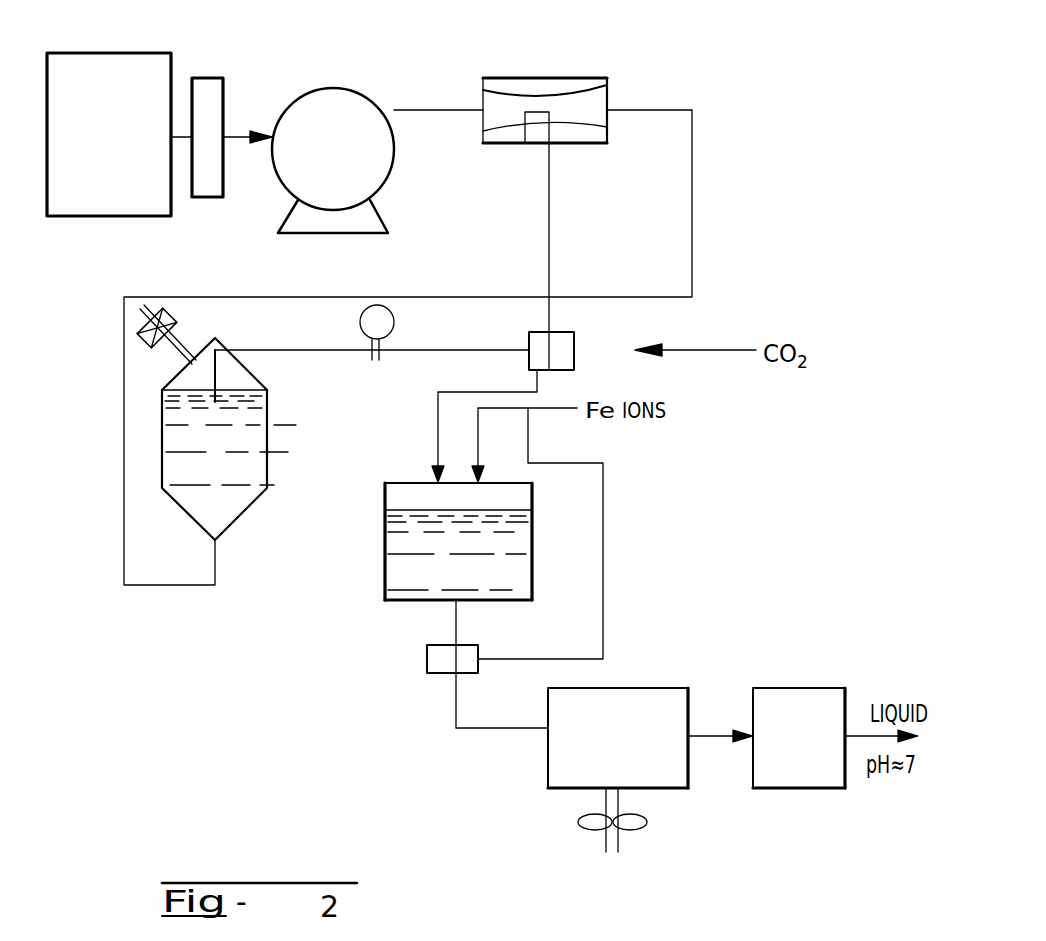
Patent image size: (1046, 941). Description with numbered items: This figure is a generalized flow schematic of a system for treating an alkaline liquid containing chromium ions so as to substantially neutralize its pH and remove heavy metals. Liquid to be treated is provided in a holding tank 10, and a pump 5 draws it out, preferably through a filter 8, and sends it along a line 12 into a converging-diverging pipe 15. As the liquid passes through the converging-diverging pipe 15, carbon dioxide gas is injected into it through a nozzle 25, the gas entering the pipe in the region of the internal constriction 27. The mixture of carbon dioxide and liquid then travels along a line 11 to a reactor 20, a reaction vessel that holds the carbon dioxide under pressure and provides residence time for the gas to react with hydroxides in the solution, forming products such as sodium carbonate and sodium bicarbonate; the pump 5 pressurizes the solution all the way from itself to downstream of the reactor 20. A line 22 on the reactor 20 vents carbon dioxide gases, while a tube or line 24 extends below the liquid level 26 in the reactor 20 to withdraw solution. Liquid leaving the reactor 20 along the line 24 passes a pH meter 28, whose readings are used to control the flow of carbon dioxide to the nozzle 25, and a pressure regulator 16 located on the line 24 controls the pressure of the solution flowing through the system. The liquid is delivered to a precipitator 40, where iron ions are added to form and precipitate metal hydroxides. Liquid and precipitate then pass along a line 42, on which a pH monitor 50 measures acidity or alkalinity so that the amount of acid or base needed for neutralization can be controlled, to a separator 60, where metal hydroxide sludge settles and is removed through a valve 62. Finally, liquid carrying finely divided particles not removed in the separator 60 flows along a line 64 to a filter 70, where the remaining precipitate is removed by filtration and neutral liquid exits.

The pump 5 is at (313, 115).
The filter 8 is at (210, 88).
The holding tank 10 is at (117, 200).
The line 11 is at (693, 203).
The line 12 is at (418, 110).
The converging-diverging pipe 15 is at (564, 107).
The pressure regulator 16 is at (392, 317).
The reactor 20 is at (192, 439).
The line 22 is at (178, 340).
The line 24 is at (223, 357).
The nozzle 25 is at (530, 118).
The liquid level 26 is at (172, 395).
The membrane 27 is at (513, 107).
The pH meter 28 is at (533, 334).
The precipitator 40 is at (385, 563).
The line 42 is at (455, 618).
The pH monitor 50 is at (428, 659).
The separator 60 is at (658, 688).
The valve 62 is at (647, 820).
The line 64 is at (712, 735).
The filter 70 is at (787, 695).